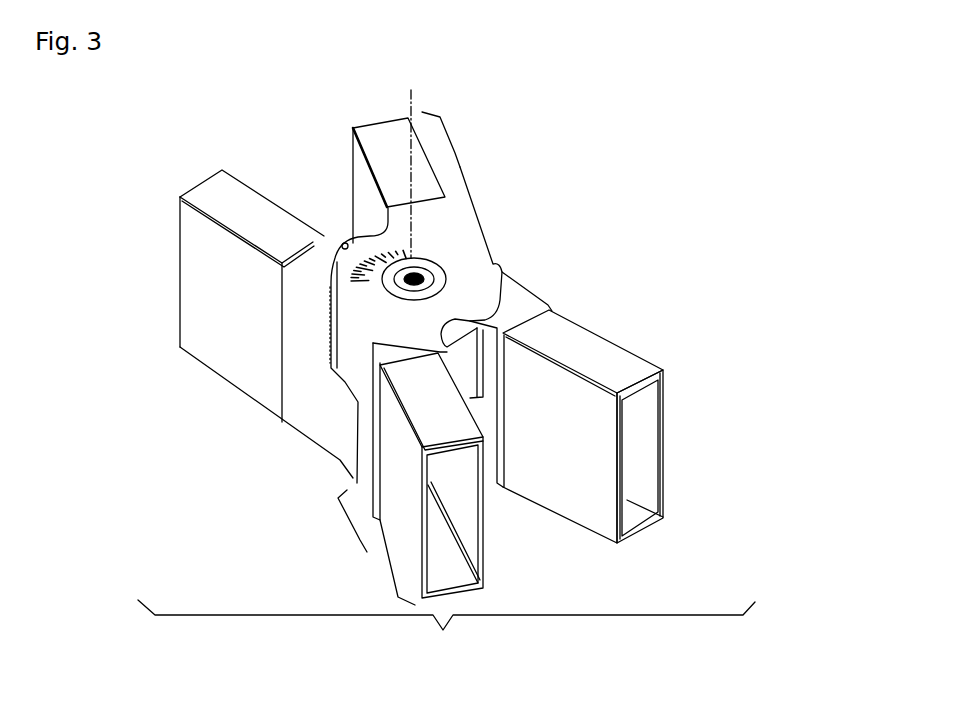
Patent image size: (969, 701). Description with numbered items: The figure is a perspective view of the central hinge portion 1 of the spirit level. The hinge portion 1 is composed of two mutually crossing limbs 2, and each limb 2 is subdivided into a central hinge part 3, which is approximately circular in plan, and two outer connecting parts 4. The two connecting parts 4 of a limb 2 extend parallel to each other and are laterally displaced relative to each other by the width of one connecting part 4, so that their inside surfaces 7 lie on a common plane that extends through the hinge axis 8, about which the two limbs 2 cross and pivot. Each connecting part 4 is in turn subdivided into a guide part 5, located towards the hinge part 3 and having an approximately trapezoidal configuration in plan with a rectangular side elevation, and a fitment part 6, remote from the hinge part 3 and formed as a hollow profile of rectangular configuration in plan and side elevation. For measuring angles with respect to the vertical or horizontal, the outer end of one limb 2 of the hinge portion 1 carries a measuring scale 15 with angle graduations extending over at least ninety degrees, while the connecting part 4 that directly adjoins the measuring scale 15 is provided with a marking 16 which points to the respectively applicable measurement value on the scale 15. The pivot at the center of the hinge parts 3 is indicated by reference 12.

The central hinge portion 1 is at (446, 636).
The limb 2 is at (462, 199).
The central hinge part 3 is at (330, 427).
The connecting part 4 is at (456, 154).
The guide part 5 is at (320, 262).
The fitment part 6 is at (392, 148).
The inside surface 7 is at (368, 187).
The hinge axis 8 is at (407, 236).
The pivot pin 12 is at (360, 353).
The measuring scale 15 is at (413, 279).
The marking 16 is at (340, 240).